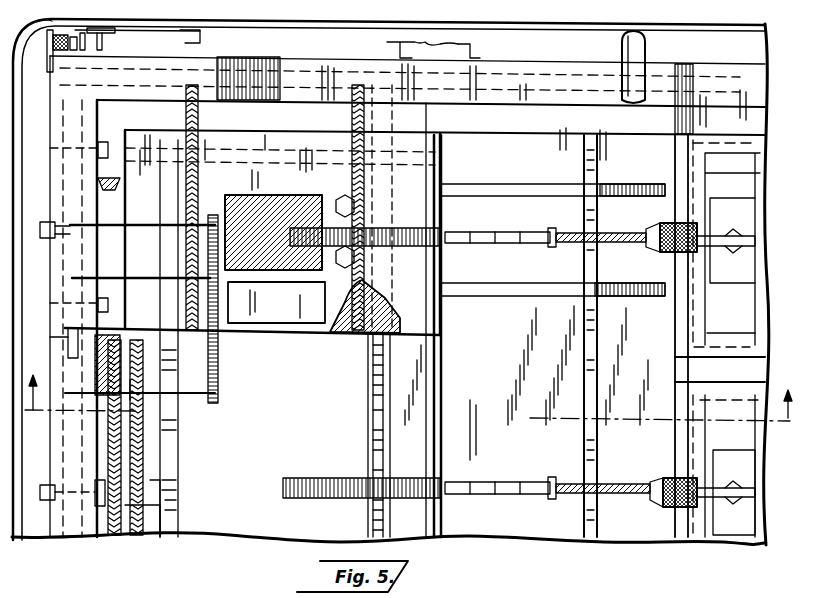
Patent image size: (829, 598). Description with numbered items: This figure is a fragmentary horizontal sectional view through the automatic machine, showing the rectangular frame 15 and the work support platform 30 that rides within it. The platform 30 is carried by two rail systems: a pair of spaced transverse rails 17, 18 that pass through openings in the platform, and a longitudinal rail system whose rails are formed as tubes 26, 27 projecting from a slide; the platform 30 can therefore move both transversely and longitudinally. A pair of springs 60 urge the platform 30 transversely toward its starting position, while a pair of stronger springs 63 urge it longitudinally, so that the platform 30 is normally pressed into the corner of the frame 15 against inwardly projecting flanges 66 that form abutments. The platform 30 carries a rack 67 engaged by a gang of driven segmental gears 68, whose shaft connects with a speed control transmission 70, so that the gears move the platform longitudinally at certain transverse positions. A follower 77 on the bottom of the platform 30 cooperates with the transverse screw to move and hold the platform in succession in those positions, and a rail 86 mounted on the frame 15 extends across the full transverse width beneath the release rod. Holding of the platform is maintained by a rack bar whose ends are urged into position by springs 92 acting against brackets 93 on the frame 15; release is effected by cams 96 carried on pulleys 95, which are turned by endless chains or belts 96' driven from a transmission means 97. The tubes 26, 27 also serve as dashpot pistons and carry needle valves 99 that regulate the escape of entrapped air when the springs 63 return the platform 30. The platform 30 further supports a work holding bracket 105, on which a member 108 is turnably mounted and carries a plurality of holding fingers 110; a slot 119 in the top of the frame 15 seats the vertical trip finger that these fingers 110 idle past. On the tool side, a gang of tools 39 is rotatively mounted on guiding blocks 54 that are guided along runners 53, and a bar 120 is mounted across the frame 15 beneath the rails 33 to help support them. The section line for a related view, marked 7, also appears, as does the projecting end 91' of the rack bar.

The rectangular frame 15 is at (62, 538).
The tube 26 is at (302, 131).
The tube 27 is at (396, 305).
The work support platform 30 is at (284, 325).
The rails 33 is at (540, 184).
The tools 39 is at (600, 243).
The runners 53 is at (758, 148).
The guiding blocks 54 is at (760, 230).
The springs 60 is at (225, 113).
The springs 63 is at (108, 190).
The inwardly projecting flanges 66 is at (113, 538).
The rack 67 is at (340, 196).
The segmental gears 68 is at (396, 228).
The speed control transmission 70 is at (480, 47).
The follower 77 is at (145, 462).
The rail 86 is at (55, 480).
The springs 92 is at (54, 50).
The brackets 93 is at (52, 24).
The pulleys 95 is at (112, 35).
The cams 96 is at (84, 58).
The endless chains or belts 96' is at (209, 42).
The transmission means 97 is at (385, 47).
The needle valves 99 is at (66, 223).
The work holding bracket 105 is at (270, 200).
The member 108 is at (222, 367).
The holding fingers 110 is at (70, 224).
The slot 119 is at (50, 343).
The bar 120 is at (599, 368).
The rail 17 is at (158, 540).
The rail 18 is at (375, 517).
The section line 7 is at (409, 411).
The cover edge 91' is at (32, 20).